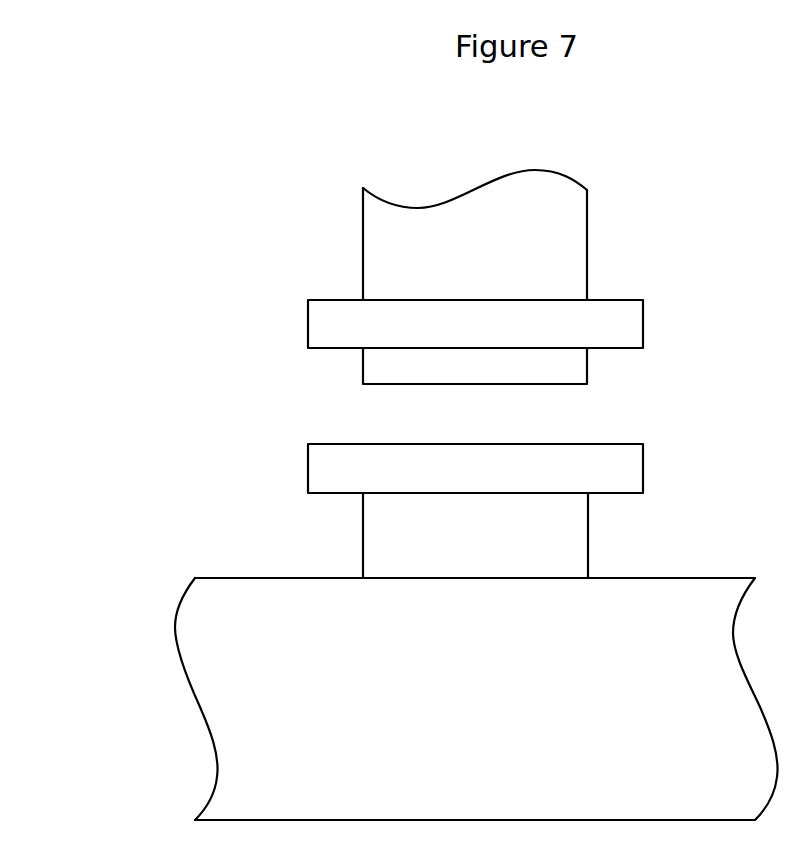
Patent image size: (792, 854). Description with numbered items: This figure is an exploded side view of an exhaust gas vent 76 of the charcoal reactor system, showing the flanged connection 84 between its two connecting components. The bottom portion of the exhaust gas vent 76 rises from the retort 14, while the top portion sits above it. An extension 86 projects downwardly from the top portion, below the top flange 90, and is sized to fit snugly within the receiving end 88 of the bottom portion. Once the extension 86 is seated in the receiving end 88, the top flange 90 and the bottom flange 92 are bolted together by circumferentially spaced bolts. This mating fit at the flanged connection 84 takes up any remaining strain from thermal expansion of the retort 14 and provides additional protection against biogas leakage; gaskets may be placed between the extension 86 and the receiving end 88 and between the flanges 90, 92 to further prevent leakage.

The retort 14 is at (712, 578).
The flanged connection 84 is at (453, 374).
The exhaust gas vent 76 is at (587, 261).
The extension 86 is at (587, 368).
The receiving end 88 is at (562, 444).
The top flange 90 is at (643, 323).
The bottom flange 92 is at (643, 468).